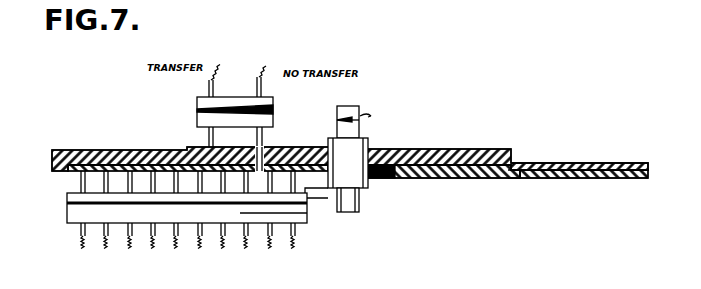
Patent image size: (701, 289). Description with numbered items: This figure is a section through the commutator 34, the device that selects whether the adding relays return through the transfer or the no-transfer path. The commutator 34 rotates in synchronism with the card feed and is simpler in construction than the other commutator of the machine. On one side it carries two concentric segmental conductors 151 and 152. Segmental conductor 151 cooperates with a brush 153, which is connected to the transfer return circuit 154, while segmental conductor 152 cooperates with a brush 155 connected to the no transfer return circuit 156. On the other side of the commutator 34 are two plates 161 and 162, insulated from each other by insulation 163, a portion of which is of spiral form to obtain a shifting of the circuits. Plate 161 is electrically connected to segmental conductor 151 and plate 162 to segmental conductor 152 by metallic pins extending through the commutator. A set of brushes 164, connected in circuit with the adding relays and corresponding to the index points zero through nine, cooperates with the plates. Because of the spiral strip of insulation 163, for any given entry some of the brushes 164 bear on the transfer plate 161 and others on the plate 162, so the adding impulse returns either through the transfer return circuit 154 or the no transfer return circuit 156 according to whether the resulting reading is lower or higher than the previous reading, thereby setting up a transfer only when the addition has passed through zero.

The commutator 34 is at (574, 163).
The segmental conductor 151 is at (487, 151).
The segmental conductor 152 is at (263, 150).
The brush 153 is at (209, 132).
The transfer return circuit 154 is at (222, 69).
The brush 155 is at (266, 128).
The no transfer return circuit 156 is at (266, 76).
The plate 161 is at (583, 178).
The plate 162 is at (73, 173).
The insulation 163 is at (513, 178).
The set of brushes 164 is at (297, 229).